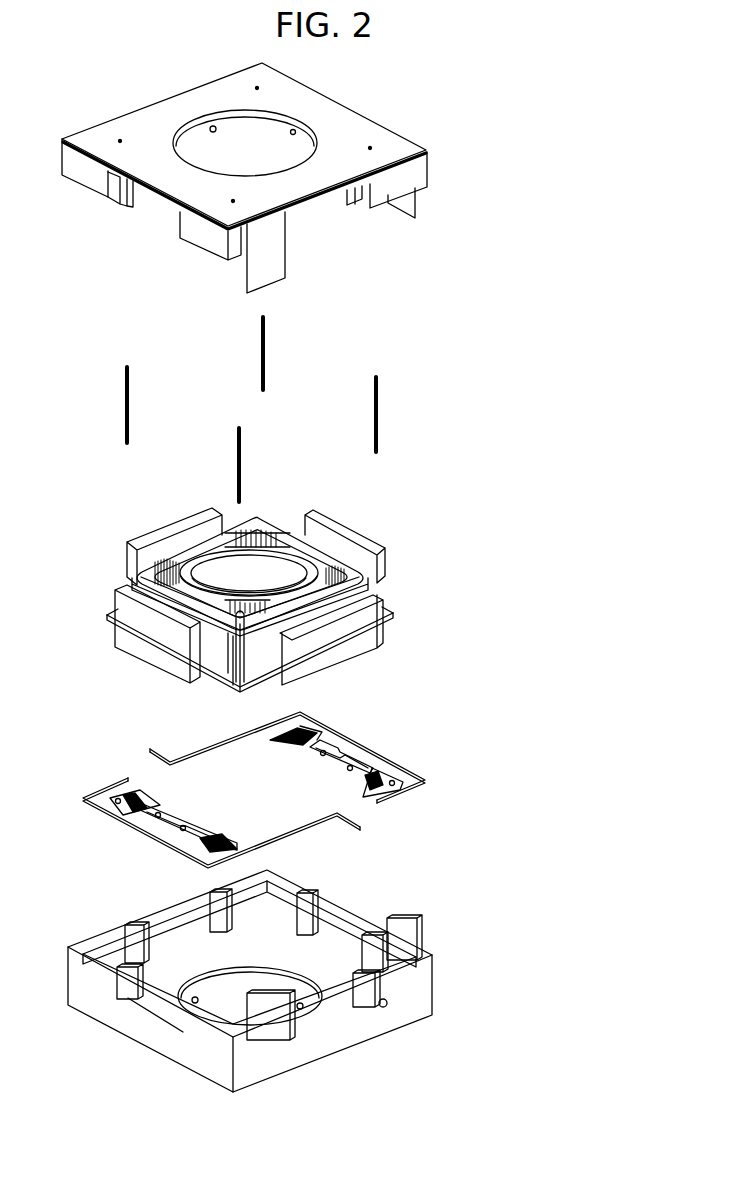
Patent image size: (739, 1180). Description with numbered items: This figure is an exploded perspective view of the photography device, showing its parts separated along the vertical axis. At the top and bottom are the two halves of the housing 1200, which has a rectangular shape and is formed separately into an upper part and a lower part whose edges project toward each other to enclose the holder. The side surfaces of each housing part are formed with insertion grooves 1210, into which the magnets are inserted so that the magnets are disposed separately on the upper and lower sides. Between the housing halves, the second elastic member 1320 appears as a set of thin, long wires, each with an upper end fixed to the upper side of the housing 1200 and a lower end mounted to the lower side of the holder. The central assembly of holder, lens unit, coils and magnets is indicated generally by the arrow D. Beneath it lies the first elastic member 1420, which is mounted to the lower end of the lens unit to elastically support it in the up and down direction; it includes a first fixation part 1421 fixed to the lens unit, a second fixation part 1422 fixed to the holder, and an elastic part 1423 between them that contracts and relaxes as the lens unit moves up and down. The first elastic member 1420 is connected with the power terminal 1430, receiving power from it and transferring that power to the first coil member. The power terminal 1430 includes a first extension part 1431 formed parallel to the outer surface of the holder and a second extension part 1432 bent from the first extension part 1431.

The housing 1200 is at (402, 180).
The insertion groove 1210 is at (158, 208).
The second elastic member 1320 is at (264, 343).
The first elastic member 1420 is at (487, 655).
The first fixation part 1421 is at (333, 753).
The second fixation part 1422 is at (310, 732).
The elastic part 1423 is at (375, 772).
The power terminal 1430 is at (520, 777).
The first extension part 1431 is at (410, 792).
The second extension part 1432 is at (410, 763).
The lens driving device D is at (418, 505).